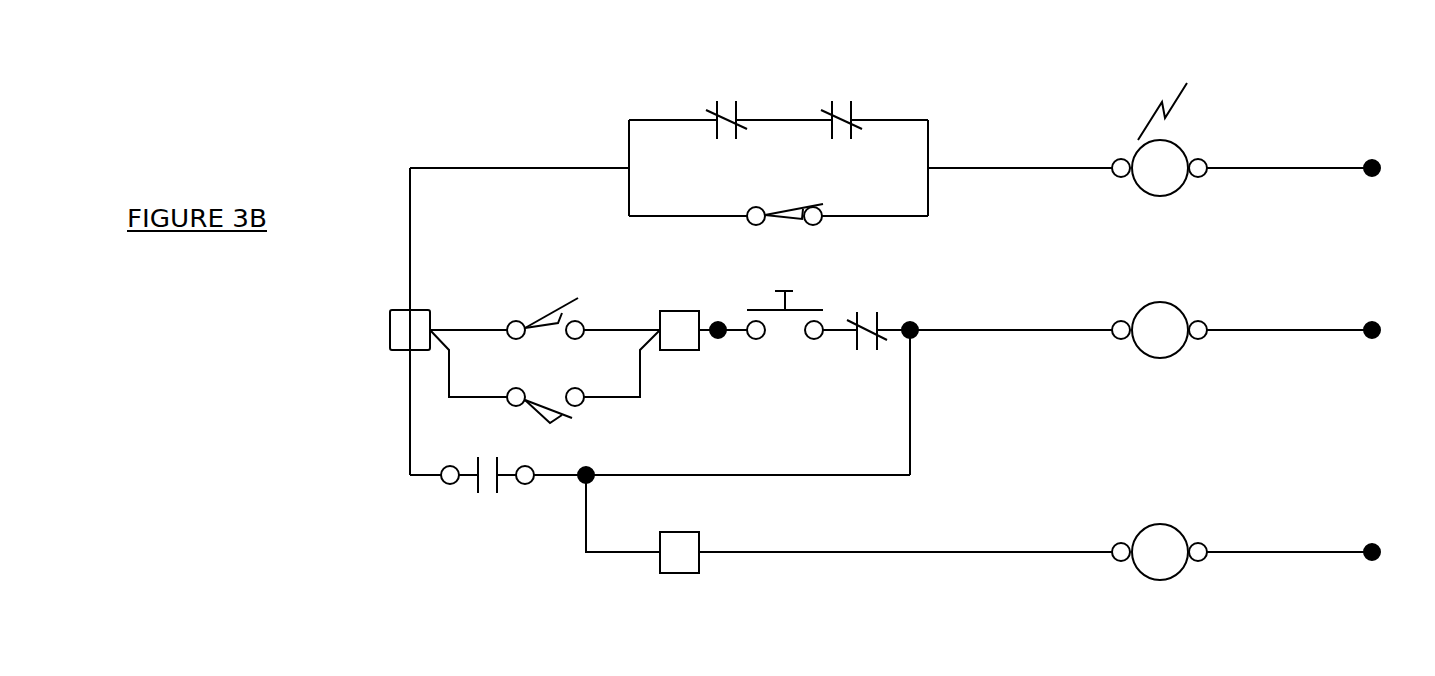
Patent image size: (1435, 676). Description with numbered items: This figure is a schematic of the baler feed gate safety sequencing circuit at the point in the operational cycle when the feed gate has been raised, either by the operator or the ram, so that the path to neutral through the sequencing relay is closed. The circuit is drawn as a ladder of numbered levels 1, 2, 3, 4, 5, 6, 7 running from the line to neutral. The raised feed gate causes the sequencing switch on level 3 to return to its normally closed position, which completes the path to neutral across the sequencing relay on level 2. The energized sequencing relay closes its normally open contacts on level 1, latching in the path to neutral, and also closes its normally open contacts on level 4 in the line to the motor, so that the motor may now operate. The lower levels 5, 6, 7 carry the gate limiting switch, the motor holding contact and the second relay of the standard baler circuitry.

The level 1 is at (637, 102).
The level 2 is at (877, 139).
The level 3 is at (637, 203).
The level 4 is at (877, 309).
The rung 5 with limit switch LS3 5 is at (503, 376).
The rung 6 with M holding contact 6 is at (628, 411).
The rung 7 supplying relay coil R1 7 is at (877, 530).